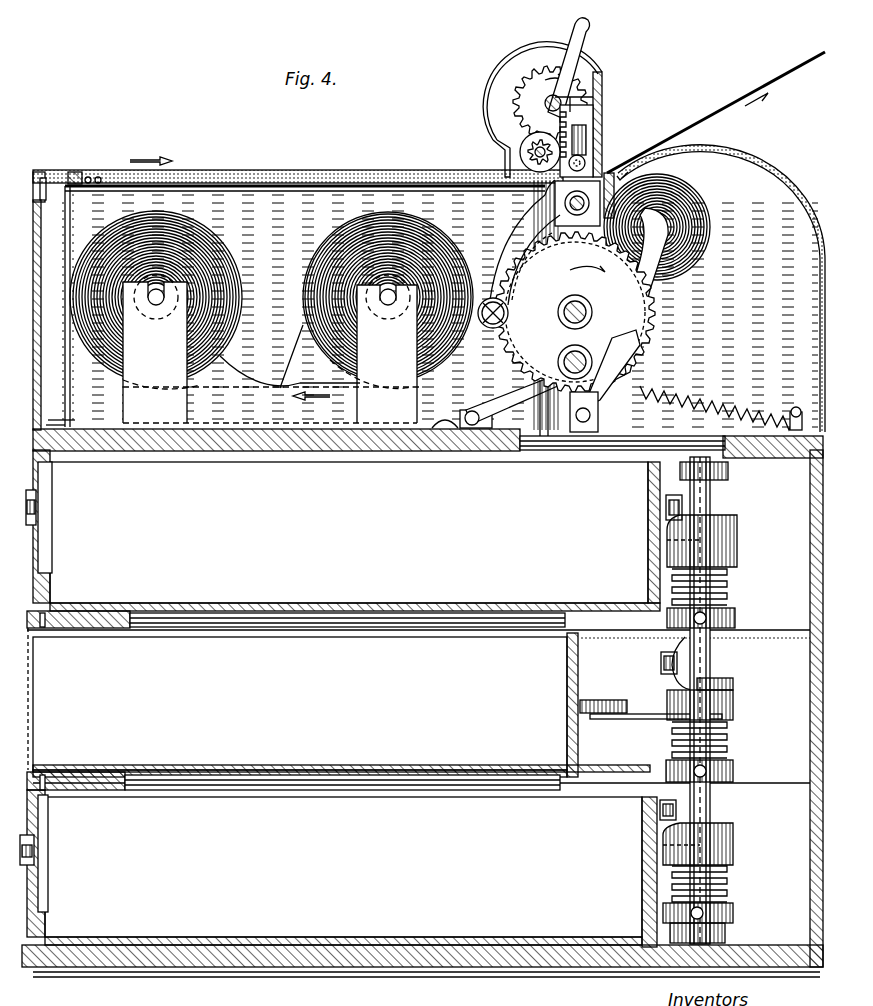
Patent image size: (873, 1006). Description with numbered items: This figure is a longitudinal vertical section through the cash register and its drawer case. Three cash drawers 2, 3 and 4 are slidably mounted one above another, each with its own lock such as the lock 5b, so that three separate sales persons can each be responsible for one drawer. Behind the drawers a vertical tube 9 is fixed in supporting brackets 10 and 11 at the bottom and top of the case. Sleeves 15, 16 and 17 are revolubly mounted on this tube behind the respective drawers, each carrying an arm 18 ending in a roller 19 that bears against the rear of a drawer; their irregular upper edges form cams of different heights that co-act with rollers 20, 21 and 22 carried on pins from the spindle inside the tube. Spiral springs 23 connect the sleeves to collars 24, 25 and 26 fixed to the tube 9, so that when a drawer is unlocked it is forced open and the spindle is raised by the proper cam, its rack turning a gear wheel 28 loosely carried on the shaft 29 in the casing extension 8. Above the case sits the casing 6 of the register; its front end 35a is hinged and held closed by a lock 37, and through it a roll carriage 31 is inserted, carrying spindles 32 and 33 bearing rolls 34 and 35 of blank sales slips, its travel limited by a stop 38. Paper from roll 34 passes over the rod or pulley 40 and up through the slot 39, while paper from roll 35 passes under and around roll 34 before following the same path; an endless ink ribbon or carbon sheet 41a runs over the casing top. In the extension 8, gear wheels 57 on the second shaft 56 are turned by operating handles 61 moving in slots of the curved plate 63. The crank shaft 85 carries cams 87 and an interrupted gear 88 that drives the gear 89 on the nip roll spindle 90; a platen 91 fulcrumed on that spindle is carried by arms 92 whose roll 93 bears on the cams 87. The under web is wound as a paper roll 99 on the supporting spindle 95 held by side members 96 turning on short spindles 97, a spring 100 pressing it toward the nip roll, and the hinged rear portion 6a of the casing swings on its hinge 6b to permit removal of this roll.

The cash drawer 2 is at (318, 598).
The cash drawer 3 is at (567, 688).
The cash drawer 4 is at (642, 843).
The lock 5b is at (36, 850).
The casing of the register 6 is at (271, 374).
The hinged rear end and top portion of casing 6a is at (787, 200).
The hinge 6b is at (622, 174).
The casing extension 8 is at (498, 142).
The tube 9 is at (722, 492).
The supporting bracket 10 is at (725, 934).
The supporting bracket 11 is at (728, 472).
The sleeve 15 is at (737, 530).
The sleeve 16 is at (733, 704).
The sleeve 17 is at (733, 840).
The arm 18 is at (646, 722).
The roller 19 is at (606, 696).
The roller 20 is at (690, 515).
The roller 21 is at (665, 665).
The roller 22 is at (660, 808).
The spiral spring 23 is at (730, 578).
The collar 24 is at (740, 612).
The collar 25 is at (733, 770).
The collar 26 is at (733, 912).
The gear wheel 28 is at (520, 146).
The shaft 29 is at (530, 156).
The roll carriage 31 is at (312, 407).
The spindle 32 is at (154, 306).
The spindle 33 is at (384, 306).
The roll 34 is at (218, 252).
The roll 35 is at (432, 235).
The front end of casing 35a is at (812, 384).
The lock 37 is at (42, 175).
The stop 38 is at (445, 425).
The slot 39 is at (78, 175).
The rod or pulley 40 is at (82, 185).
The endless ink ribbon or carbon sheet 41a is at (325, 172).
The second shaft 56 is at (594, 100).
The gear wheel 57 is at (530, 95).
The operating handle 61 is at (582, 34).
The curved plate 63 is at (527, 58).
The crank shaft 85 is at (585, 308).
The cam 87 is at (512, 260).
The interrupted gear 88 is at (648, 352).
The gear 89 is at (614, 200).
The spindle 90 is at (565, 205).
The platen 91 is at (545, 195).
The arm 92 is at (525, 245).
The roll 93 is at (488, 330).
The supporting spindle 95 is at (664, 226).
The side member 96 is at (633, 296).
The short spindle 97 is at (592, 362).
The paper roll 99 is at (706, 258).
The spring 100 is at (718, 398).